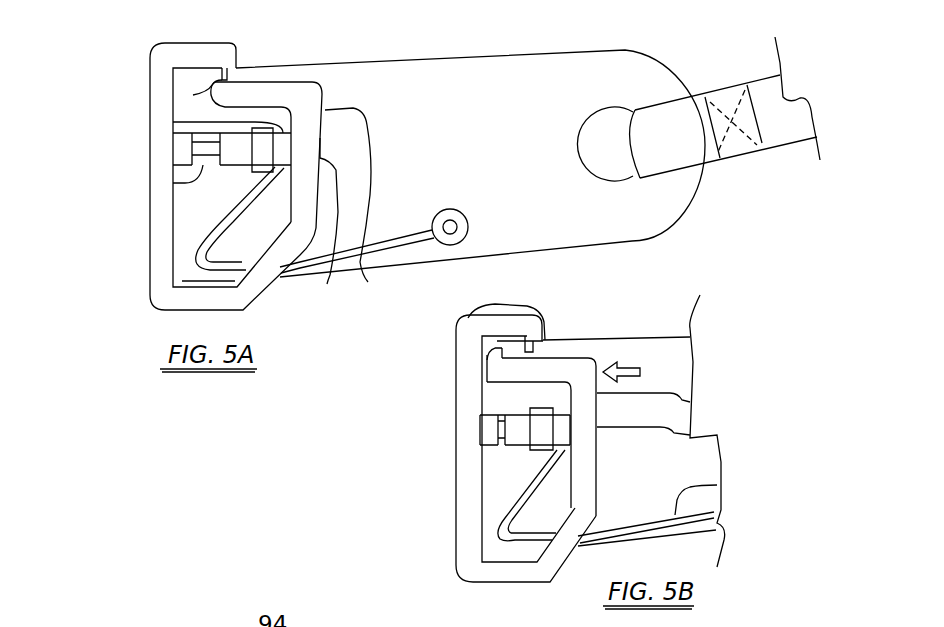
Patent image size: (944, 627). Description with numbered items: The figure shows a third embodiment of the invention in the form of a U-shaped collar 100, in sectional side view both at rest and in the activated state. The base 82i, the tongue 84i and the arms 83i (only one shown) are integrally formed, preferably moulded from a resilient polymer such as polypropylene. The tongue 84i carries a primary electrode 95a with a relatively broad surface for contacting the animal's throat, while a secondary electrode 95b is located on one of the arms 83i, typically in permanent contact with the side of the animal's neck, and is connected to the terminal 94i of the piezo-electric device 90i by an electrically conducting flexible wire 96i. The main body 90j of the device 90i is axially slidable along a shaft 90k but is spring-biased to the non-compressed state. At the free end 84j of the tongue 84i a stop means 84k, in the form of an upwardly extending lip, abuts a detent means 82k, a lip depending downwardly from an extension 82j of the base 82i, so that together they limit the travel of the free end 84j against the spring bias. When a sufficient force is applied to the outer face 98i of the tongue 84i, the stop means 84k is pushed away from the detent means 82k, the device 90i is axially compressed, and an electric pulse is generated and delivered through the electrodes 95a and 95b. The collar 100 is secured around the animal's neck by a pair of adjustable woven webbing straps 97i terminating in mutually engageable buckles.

In FIG. 5A, the base 82i is at (150, 200).
In FIG. 5B, the base 82i is at (455, 443).
In FIG. 5B, the extension 82j is at (455, 322).
In FIG. 5A, the detent means 82k is at (222, 80).
In FIG. 5B, the detent means 82k is at (485, 348).
In FIG. 5A, the tongue 84i is at (368, 282).
In FIG. 5B, the tongue 84i is at (690, 400).
In FIG. 5A, the free end 84j is at (277, 95).
In FIG. 5B, the free end 84j is at (547, 370).
In FIG. 5A, the stop means 84k is at (193, 95).
In FIG. 5B, the stop means 84k is at (487, 360).
In FIG. 5A, the piezo-electric device 90i is at (217, 185).
In FIG. 5B, the piezo-electric device 90i is at (517, 466).
In FIG. 5A, the main body 90j is at (237, 172).
In FIG. 5A, the shaft 90k is at (173, 183).
In FIG. 5A, the terminal 94i is at (173, 122).
In FIG. 5A, the primary electrode 95a is at (327, 284).
In FIG. 5B, the primary electrode 95a is at (690, 430).
In FIG. 5A, the secondary electrode 95b is at (461, 243).
In FIG. 5A, the flexible wire 96i is at (410, 238).
In FIG. 5B, the flexible wire 96i is at (717, 485).
In FIG. 5A, the straps 97i is at (765, 98).
In FIG. 5B, the outer face 98i is at (603, 468).
In FIG. 5A, the arms 83i is at (580, 230).
In FIG. 5B, the arms 83i is at (645, 352).
In FIG. 5A, the U-shaped collar 100 is at (713, 212).